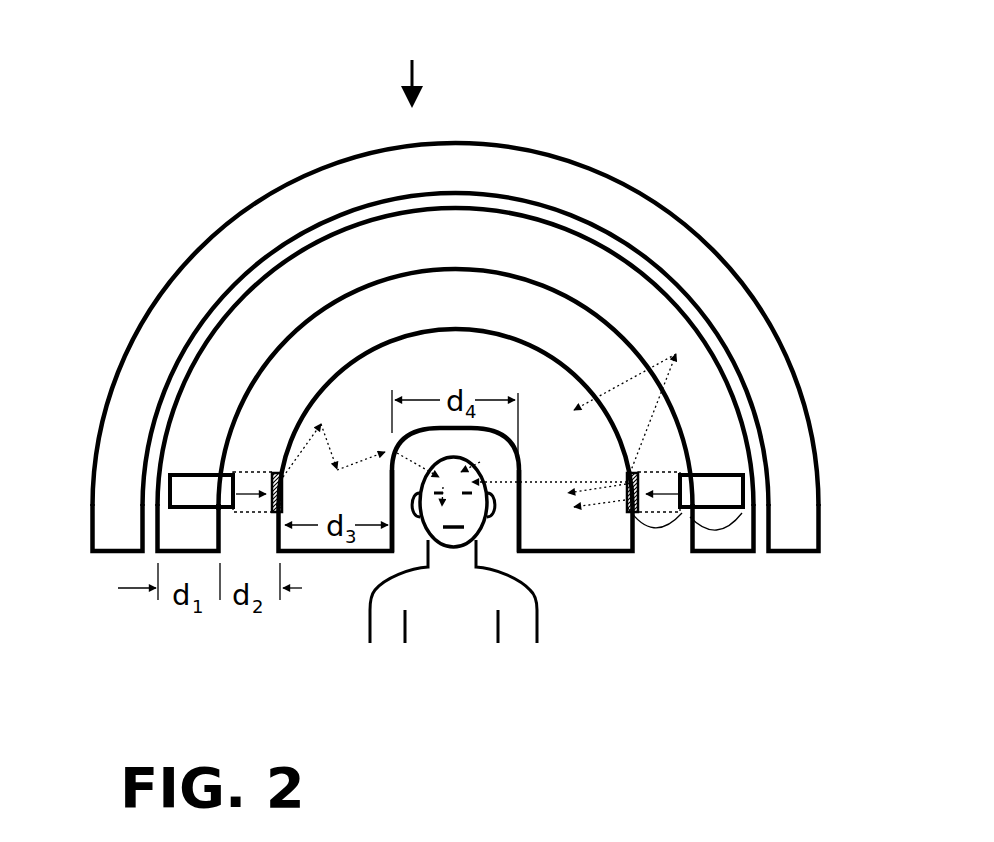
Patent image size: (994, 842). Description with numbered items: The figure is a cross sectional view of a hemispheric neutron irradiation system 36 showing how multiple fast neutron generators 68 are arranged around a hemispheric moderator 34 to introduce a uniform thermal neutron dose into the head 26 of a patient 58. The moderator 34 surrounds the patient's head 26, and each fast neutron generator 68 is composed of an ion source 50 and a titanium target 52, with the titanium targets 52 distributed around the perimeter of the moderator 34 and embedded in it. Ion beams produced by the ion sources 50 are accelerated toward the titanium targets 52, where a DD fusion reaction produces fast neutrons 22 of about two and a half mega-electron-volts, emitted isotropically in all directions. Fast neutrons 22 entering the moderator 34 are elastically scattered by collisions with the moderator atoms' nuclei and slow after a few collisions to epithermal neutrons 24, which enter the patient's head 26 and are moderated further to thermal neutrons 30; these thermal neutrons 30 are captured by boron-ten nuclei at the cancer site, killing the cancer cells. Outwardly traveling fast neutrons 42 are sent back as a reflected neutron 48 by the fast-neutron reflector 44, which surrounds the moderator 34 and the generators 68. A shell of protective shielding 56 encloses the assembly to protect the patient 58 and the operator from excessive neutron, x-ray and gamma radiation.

The fast neutrons 22 is at (300, 457).
The epithermal neutrons 24 is at (362, 462).
The patient's head 26 is at (422, 523).
The thermal neutrons 30 is at (448, 475).
The hemispheric moderator 34 is at (487, 355).
The hemispheric neutron irradiation system 36 is at (410, 59).
The outwardly traveling fast neutrons 42 is at (653, 417).
The fast-neutron reflector 44 is at (526, 247).
The reflected neutron 48 is at (620, 377).
The ion source 50 is at (708, 493).
The titanium target 52 is at (633, 467).
The protective shielding 56 is at (519, 175).
The patient 58 is at (463, 613).
The fast neutron generator 68 is at (688, 517).